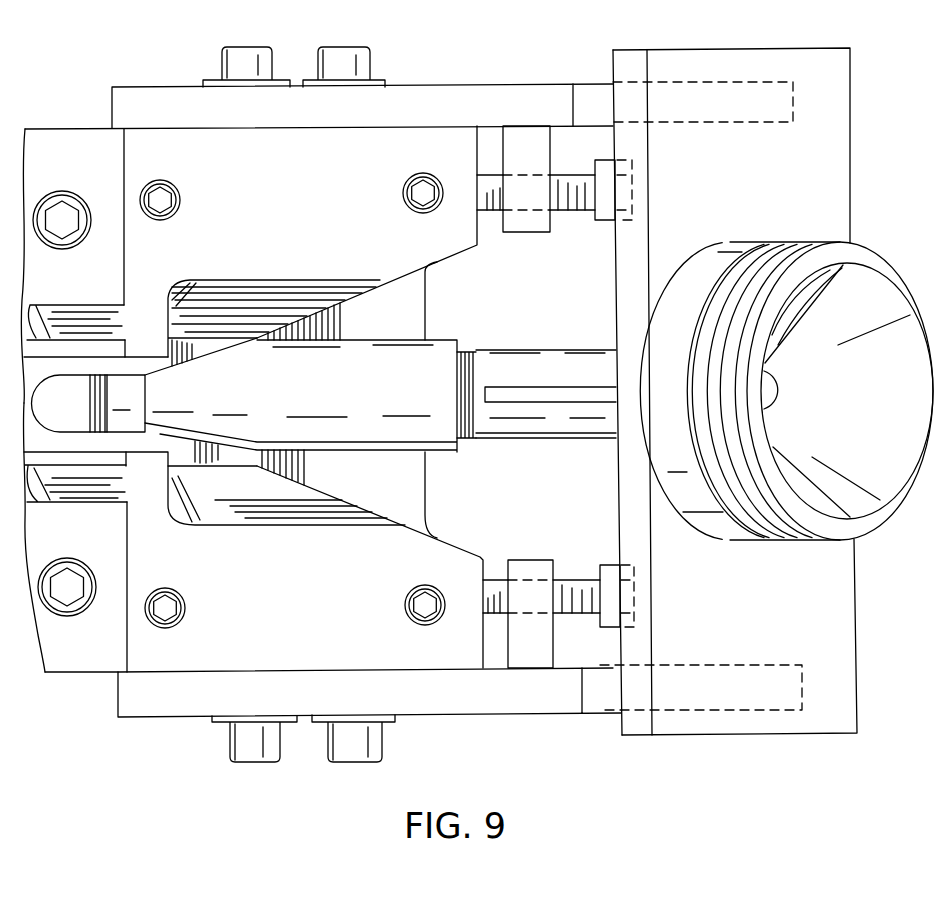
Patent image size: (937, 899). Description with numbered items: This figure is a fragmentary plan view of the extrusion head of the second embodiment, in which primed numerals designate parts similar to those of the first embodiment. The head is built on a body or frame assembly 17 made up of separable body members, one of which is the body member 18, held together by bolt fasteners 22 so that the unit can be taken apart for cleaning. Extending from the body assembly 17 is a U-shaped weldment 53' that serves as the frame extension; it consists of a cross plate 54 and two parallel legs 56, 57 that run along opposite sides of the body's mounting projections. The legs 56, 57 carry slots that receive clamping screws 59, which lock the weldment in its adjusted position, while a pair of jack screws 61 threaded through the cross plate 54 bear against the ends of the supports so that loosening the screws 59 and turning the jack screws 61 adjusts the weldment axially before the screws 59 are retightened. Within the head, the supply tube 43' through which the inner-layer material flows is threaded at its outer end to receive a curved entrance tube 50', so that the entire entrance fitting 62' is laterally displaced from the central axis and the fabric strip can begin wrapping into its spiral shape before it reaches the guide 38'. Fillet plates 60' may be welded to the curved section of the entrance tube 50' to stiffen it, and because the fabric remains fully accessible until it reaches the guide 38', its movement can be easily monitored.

The body or frame assembly 17 is at (76, 126).
The body member 18 is at (77, 660).
The bolt fasteners 22 is at (63, 213).
The guide 38' is at (96, 370).
The supply tube 43' is at (314, 422).
The curved entrance tube 50' is at (546, 418).
The U-shaped weldment 53' is at (592, 408).
The cross plate 54 is at (705, 727).
The leg 56 is at (432, 92).
The leg 57 is at (432, 702).
The clamping screws 59 is at (319, 57).
The fillet plates 60' is at (550, 355).
The jack screws 61 is at (605, 215).
The entrance fitting 62' is at (786, 418).